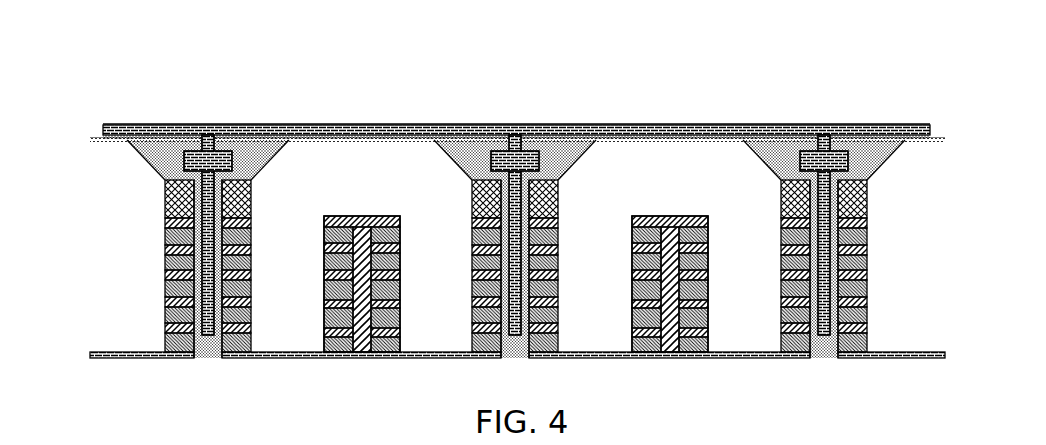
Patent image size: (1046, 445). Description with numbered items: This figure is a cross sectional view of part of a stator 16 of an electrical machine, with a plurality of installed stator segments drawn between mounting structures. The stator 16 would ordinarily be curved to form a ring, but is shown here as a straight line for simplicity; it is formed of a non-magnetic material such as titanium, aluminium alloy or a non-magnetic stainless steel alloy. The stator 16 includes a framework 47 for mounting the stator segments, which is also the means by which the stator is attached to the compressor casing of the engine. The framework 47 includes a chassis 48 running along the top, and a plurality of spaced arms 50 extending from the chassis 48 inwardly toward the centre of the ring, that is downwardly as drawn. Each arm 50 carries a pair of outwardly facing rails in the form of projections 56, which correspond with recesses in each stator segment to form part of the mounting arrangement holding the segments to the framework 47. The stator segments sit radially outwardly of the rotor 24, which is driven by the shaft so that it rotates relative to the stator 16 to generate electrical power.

The stator 16 is at (273, 113).
The rotor 24 is at (365, 170).
The mounting framework 47 is at (556, 115).
The chassis 48 is at (780, 123).
The spaced arms 50 is at (478, 124).
The projections 56 is at (185, 137).